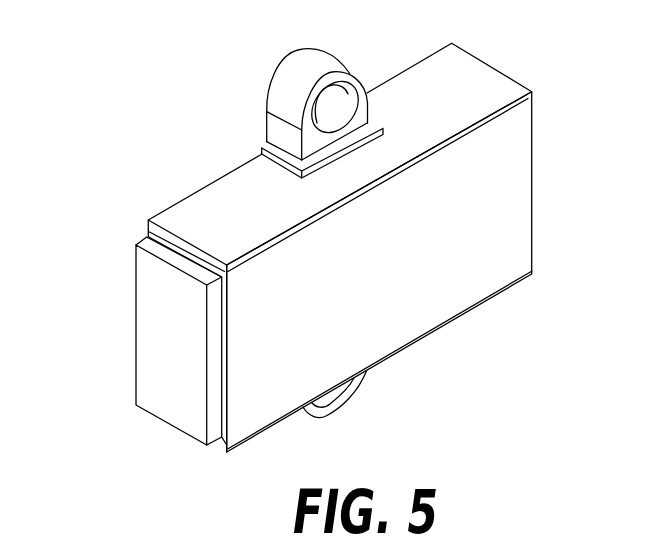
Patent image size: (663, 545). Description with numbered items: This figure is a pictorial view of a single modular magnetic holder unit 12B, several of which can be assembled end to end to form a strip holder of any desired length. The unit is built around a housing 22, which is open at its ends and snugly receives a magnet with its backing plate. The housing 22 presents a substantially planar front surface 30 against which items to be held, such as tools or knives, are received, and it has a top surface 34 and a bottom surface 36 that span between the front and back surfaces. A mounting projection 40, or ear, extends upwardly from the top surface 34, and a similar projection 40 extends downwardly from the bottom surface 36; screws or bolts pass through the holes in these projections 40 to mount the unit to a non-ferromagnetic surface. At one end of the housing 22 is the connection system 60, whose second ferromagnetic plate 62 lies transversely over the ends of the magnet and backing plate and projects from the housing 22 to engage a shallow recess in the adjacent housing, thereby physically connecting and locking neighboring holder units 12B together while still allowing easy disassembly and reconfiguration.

The magnetic holder unit 12B is at (323, 236).
The housing 22 is at (376, 247).
The front surface 30 is at (368, 273).
The top surface 34 is at (224, 208).
The bottom surface 36 is at (402, 348).
The mounting projection 40 is at (297, 72).
The connection system 60 is at (132, 341).
The second ferromagnetic plate 62 is at (172, 322).